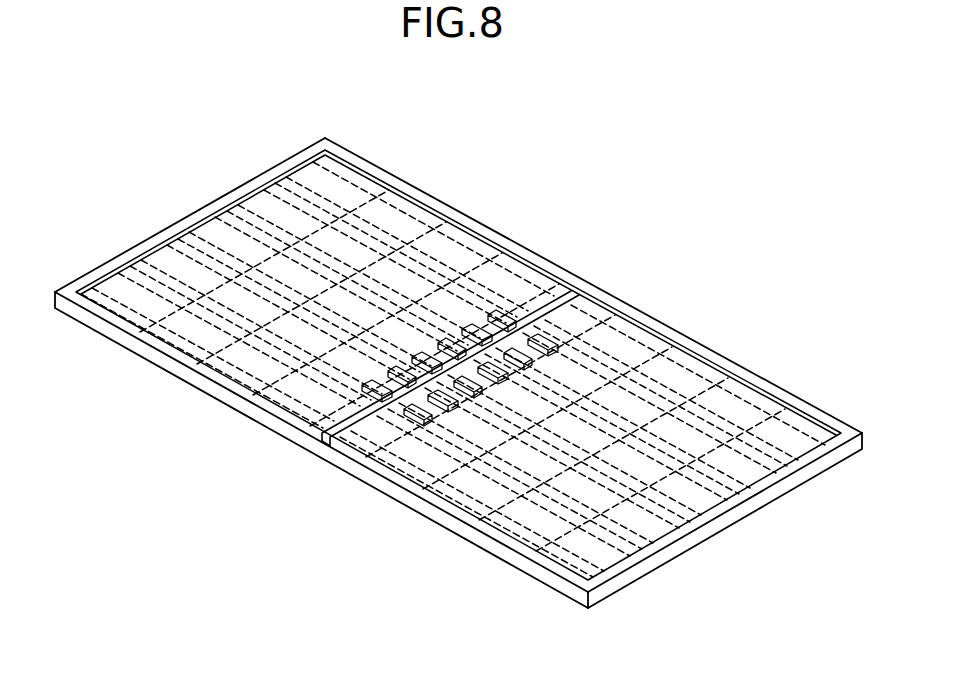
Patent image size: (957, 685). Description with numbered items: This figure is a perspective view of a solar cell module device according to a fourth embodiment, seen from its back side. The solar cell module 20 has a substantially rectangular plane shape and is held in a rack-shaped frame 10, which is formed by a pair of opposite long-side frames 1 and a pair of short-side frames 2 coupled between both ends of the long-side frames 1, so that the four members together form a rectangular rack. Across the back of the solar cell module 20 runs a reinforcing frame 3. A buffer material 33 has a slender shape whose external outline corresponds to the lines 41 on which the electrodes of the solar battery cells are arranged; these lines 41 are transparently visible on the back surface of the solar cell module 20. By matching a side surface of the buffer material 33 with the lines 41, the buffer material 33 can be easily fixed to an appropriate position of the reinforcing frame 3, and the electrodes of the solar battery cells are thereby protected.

The long-side frame 1 is at (471, 218).
The short-side frame 2 is at (203, 207).
The rack-shaped frame 10 is at (394, 175).
The solar cell module 20 is at (605, 555).
The reinforcing frame 3 is at (562, 302).
The buffer material 33 is at (502, 380).
The lines on which electrodes are arranged 41 is at (665, 385).